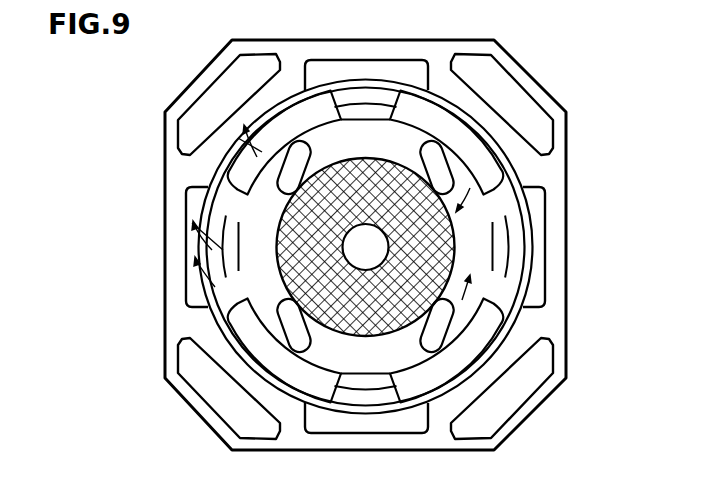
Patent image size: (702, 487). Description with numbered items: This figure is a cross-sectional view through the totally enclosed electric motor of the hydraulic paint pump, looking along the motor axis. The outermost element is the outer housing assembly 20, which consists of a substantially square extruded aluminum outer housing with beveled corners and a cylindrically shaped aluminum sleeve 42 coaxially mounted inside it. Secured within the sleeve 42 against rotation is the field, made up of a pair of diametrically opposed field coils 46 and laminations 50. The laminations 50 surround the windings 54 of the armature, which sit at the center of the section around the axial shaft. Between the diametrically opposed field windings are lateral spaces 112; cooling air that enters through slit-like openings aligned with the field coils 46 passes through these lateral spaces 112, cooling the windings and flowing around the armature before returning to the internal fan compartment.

The outer housing assembly 20 is at (384, 40).
The sleeve 42 is at (532, 243).
The field coil 46 is at (425, 146).
The laminations 50 is at (477, 177).
The windings 54 is at (270, 258).
The lateral spaces 112 is at (252, 216).